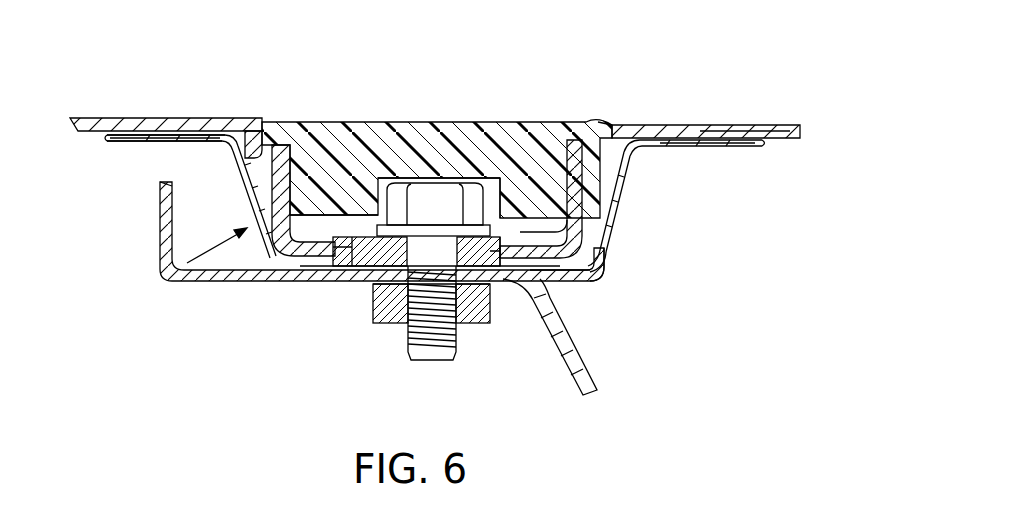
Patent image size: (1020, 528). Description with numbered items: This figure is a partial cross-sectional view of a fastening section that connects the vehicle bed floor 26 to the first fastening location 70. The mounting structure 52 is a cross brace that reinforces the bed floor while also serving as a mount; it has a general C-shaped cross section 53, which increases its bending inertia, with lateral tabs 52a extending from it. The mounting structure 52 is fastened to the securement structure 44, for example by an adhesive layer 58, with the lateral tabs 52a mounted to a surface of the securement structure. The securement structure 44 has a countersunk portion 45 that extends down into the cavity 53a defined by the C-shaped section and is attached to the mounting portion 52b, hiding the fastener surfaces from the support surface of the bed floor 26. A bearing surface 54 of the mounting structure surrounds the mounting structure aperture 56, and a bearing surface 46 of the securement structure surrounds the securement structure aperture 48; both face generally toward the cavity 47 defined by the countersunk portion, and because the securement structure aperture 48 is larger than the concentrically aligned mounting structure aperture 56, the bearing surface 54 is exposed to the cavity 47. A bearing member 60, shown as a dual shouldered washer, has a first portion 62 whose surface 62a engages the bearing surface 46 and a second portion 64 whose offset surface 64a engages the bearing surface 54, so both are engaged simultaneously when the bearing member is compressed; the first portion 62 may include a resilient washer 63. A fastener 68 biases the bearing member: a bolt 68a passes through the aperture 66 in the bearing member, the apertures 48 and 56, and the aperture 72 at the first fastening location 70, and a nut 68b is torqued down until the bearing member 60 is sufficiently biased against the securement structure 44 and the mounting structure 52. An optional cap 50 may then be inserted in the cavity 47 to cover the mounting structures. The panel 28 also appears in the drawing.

The vehicle bed floor 26 is at (697, 98).
The panel 28 is at (86, 118).
The securement structure 44 is at (614, 110).
The countersunk portion 45 is at (598, 197).
The bearing surface 46 is at (562, 240).
The cavity 47 is at (600, 252).
The securement structure aperture 48 is at (492, 268).
The cap 50 is at (532, 123).
The mounting structure 52 is at (608, 262).
The lateral tabs 52a is at (112, 143).
The mounting portion 52b is at (575, 279).
The general C-shaped cross section 53 is at (200, 282).
The cavity 53a is at (265, 186).
The bearing surface 54 is at (478, 326).
The mounting structure aperture 56 is at (392, 328).
The adhesive layer 58 is at (300, 274).
The bearing member 60 is at (358, 212).
The first portion 62 is at (330, 212).
The surface 62a is at (307, 282).
The resilient washer 63 is at (398, 176).
The second portion 64 is at (353, 270).
The surface 64a is at (358, 282).
The aperture 66 is at (420, 262).
The fastener 68 is at (463, 362).
The bolt 68a is at (445, 178).
The nut 68b is at (378, 296).
The first fastening location 70 is at (539, 307).
The aperture 72 is at (428, 292).